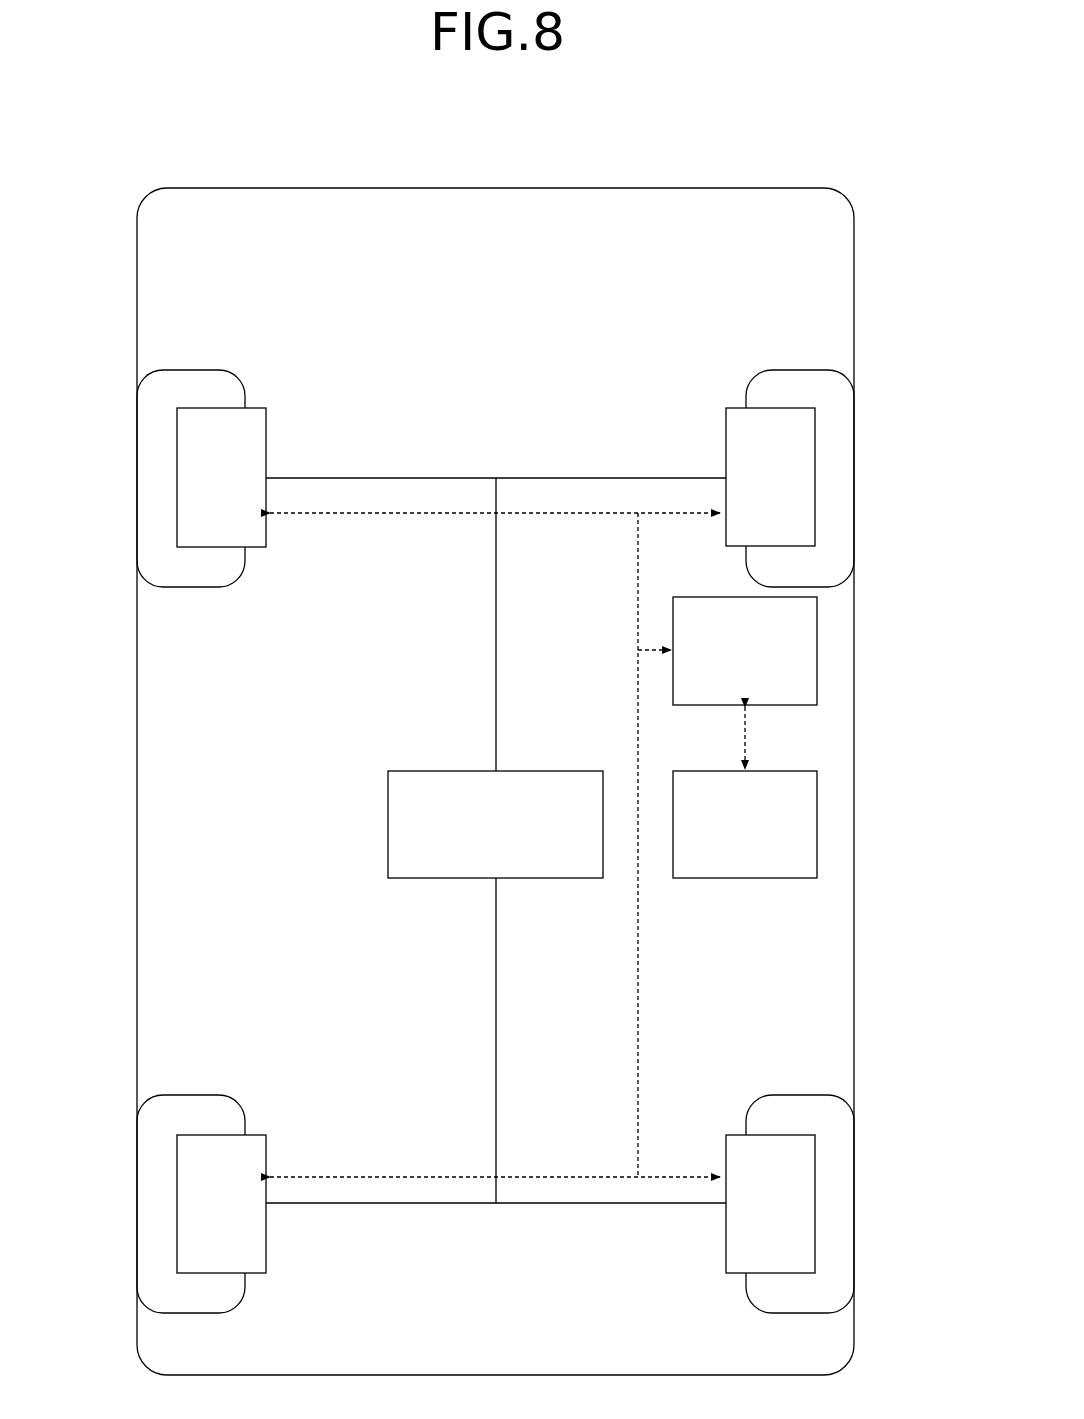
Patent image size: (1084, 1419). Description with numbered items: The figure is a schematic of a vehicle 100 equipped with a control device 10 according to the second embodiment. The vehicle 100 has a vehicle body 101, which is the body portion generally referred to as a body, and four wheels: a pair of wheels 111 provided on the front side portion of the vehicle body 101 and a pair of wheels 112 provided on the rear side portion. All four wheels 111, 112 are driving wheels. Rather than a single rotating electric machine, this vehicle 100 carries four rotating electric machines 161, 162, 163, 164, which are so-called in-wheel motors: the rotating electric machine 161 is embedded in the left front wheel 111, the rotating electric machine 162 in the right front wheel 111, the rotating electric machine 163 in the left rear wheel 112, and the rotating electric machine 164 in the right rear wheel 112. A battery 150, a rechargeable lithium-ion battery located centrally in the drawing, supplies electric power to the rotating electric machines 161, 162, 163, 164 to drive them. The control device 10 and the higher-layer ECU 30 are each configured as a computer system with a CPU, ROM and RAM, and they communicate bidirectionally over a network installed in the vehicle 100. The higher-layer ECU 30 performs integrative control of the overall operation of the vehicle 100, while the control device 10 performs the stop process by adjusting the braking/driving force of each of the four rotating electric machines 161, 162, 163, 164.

The vehicle 100 is at (858, 136).
The vehicle body 101 is at (854, 278).
The wheels 111 is at (160, 515).
The wheels 112 is at (160, 1197).
The rotating electric machine 161 is at (188, 459).
The rotating electric machine 162 is at (800, 433).
The rotating electric machine 163 is at (188, 1153).
The rotating electric machine 164 is at (800, 1163).
The battery 150 is at (386, 820).
The control device 10 is at (817, 642).
The higher-layer ECU 30 is at (817, 822).